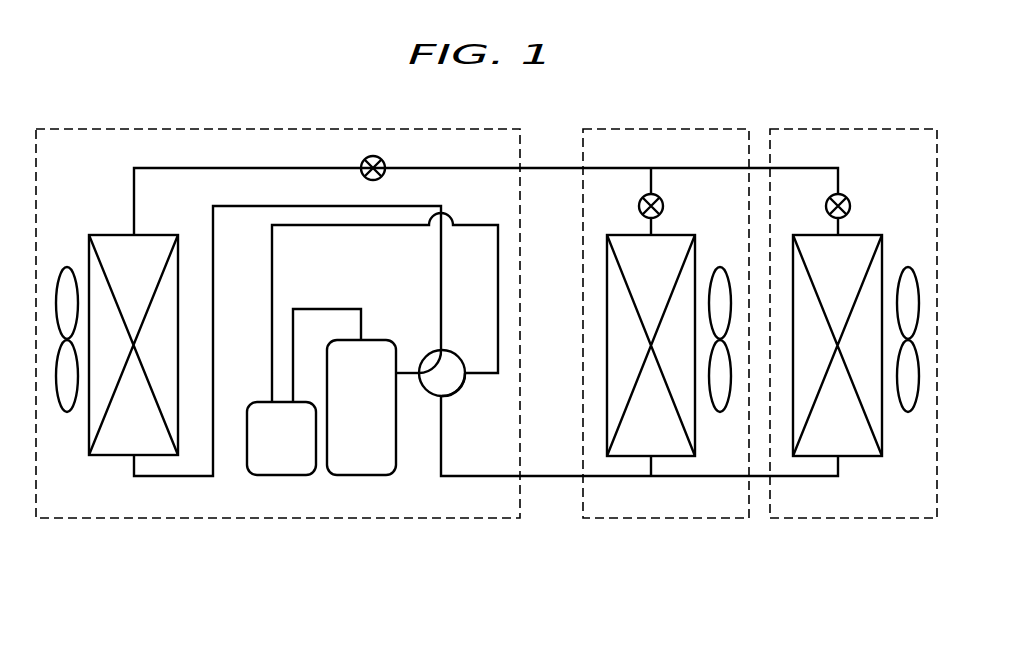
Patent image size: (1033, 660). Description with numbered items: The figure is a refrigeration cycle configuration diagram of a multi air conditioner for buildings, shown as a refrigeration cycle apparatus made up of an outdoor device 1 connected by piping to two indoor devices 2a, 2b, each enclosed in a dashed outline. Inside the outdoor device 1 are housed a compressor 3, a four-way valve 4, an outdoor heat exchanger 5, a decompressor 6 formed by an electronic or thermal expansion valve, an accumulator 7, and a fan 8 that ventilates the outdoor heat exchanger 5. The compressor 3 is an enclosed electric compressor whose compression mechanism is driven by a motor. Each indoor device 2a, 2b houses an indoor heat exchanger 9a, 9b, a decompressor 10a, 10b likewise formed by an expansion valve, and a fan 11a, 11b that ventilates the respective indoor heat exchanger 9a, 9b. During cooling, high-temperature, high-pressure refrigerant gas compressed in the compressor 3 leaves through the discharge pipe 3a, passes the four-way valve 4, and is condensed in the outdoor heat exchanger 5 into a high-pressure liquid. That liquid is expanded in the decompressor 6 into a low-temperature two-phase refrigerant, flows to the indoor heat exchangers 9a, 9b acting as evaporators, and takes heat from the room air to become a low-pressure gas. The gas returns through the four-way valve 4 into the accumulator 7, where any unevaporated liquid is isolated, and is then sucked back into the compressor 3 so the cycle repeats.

The outdoor device 1 is at (400, 518).
The indoor device 2a is at (635, 518).
The indoor device 2b is at (820, 518).
The compressor 3 is at (377, 342).
The discharge pipe 3a is at (412, 376).
The four-way valve 4 is at (452, 354).
The outdoor heat exchanger 5 is at (107, 233).
The decompressor 6 is at (384, 161).
The accumulator 7 is at (258, 404).
The fan 8 is at (70, 412).
The indoor heat exchanger 9a is at (677, 234).
The indoor heat exchanger 9b is at (864, 234).
The decompressor 10a is at (638, 209).
The decompressor 10b is at (825, 209).
The fan 11a is at (722, 412).
The fan 11b is at (910, 412).